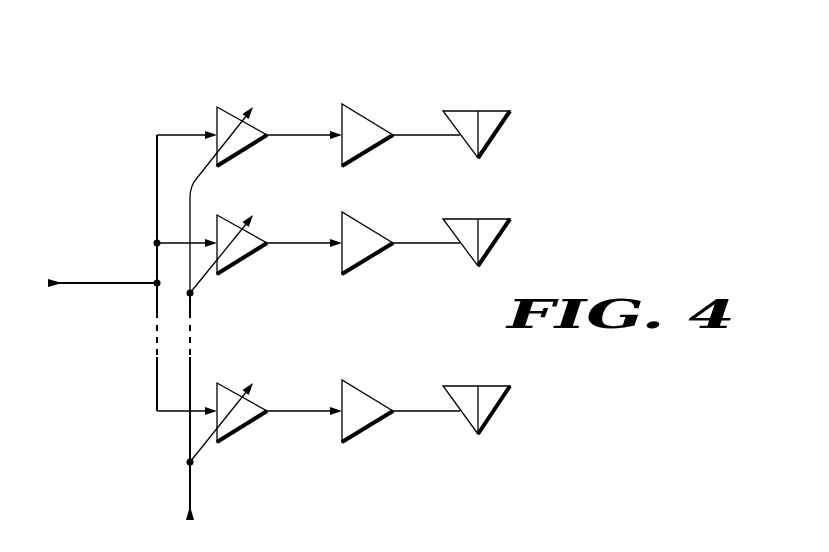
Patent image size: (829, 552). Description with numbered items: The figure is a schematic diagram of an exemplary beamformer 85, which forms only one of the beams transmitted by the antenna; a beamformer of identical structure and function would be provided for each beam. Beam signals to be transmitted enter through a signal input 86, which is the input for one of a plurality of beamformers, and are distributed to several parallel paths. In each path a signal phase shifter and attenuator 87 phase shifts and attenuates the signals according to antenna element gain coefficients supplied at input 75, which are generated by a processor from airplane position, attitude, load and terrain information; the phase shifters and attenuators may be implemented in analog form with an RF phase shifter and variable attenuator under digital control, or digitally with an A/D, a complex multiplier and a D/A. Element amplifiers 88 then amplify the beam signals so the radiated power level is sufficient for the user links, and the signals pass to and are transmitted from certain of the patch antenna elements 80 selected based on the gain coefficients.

The input 75 is at (190, 487).
The patch antenna elements 80 is at (473, 80).
The beamformer 85 is at (562, 151).
The signal input 86 is at (107, 283).
The signal phase shifter and attenuator 87 is at (237, 80).
The element amplifiers 88 is at (362, 80).